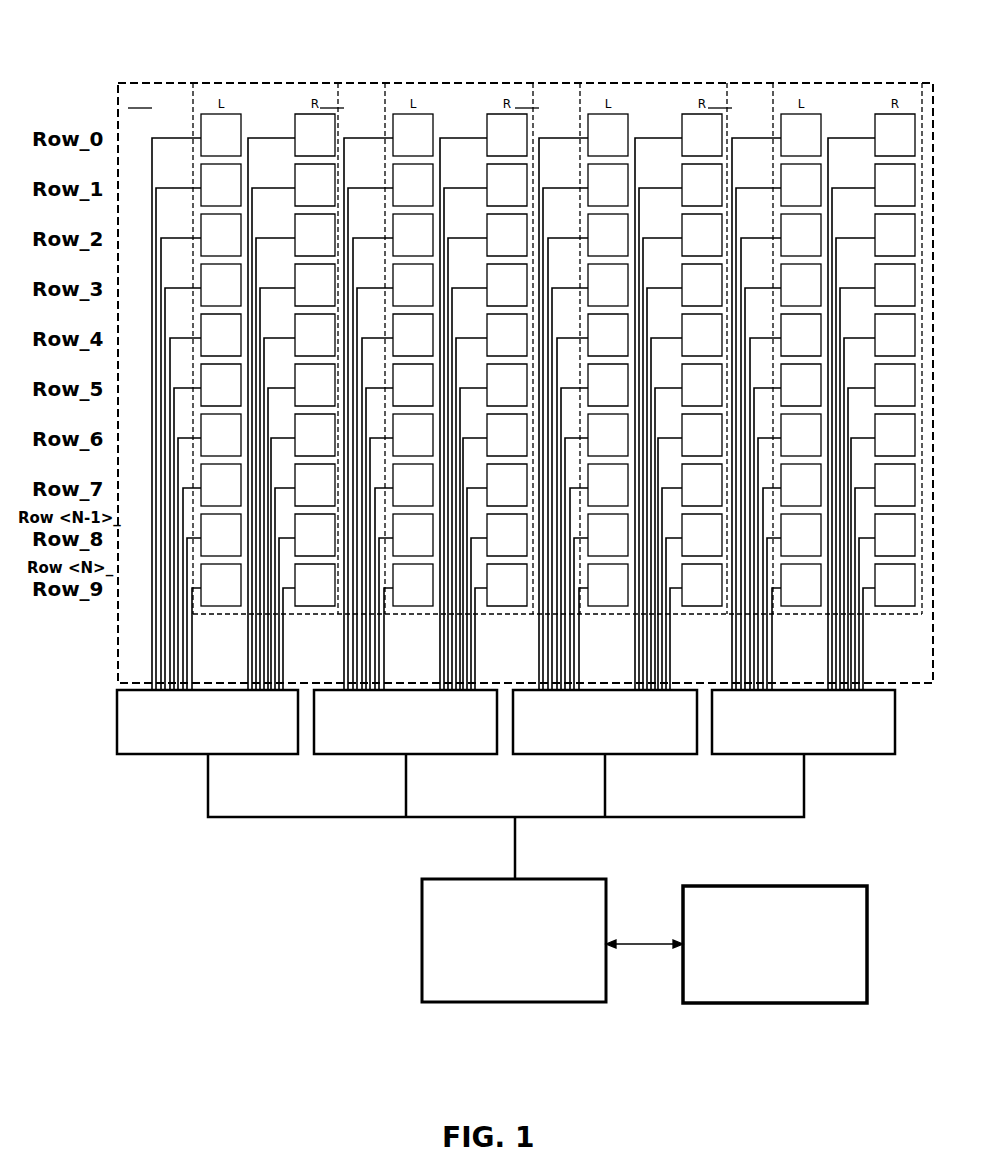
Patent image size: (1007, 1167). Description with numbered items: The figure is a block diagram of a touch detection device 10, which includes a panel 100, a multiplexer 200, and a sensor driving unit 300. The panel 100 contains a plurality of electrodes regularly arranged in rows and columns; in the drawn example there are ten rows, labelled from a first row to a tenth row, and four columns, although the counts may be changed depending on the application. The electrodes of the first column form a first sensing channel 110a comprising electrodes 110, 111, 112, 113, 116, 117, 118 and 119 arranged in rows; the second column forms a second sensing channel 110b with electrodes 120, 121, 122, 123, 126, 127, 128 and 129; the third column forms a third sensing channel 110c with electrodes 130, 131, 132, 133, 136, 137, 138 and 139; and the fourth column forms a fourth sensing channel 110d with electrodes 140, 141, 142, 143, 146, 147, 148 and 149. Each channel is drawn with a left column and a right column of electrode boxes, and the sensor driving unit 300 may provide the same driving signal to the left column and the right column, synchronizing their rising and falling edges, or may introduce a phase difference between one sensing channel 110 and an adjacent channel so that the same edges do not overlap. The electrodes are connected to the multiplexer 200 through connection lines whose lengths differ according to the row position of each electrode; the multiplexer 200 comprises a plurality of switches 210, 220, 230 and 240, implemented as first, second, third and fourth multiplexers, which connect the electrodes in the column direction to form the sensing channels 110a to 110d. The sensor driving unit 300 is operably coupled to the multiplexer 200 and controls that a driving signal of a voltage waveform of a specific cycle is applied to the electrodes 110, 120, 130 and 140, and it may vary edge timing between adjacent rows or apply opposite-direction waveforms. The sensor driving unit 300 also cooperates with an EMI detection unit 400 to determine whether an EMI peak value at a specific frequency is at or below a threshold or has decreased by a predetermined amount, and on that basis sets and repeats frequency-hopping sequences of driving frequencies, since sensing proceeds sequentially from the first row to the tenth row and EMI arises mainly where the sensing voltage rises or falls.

The touch detection device 10 is at (806, 59).
The panel 100 is at (221, 59).
The electrode 110 is at (525, 373).
The first sensing channel 110a is at (231, 386).
The second sensing channel 110b is at (423, 386).
The third sensing channel 110c is at (618, 386).
The fourth sensing channel 110d is at (811, 386).
The electrode 111 is at (221, 185).
The electrode 112 is at (221, 235).
The electrode 113 is at (221, 285).
The electrode 116 is at (221, 435).
The electrode 117 is at (221, 485).
The electrode 118 is at (221, 535).
The electrode 119 is at (221, 585).
The electrode 120 is at (413, 135).
The electrode 121 is at (413, 185).
The electrode 122 is at (413, 235).
The electrode 123 is at (413, 285).
The electrode 126 is at (413, 435).
The electrode 127 is at (413, 485).
The electrode 128 is at (413, 535).
The electrode 129 is at (413, 585).
The electrode 130 is at (608, 135).
The electrode 131 is at (608, 185).
The electrode 132 is at (608, 235).
The electrode 133 is at (608, 285).
The electrode 136 is at (608, 435).
The electrode 137 is at (608, 485).
The electrode 138 is at (608, 535).
The electrode 139 is at (608, 585).
The electrode 140 is at (801, 135).
The electrode 141 is at (801, 185).
The electrode 142 is at (801, 235).
The electrode 143 is at (801, 285).
The electrode 146 is at (801, 435).
The electrode 147 is at (801, 485).
The electrode 148 is at (801, 535).
The electrode 149 is at (801, 585).
The multiplexer 200 is at (64, 726).
The switch 210 is at (207, 722).
The switch 220 is at (405, 722).
The switch 230 is at (605, 722).
The switch 240 is at (803, 722).
The sensor driving unit 300 is at (514, 940).
The EMI detection unit 400 is at (775, 944).